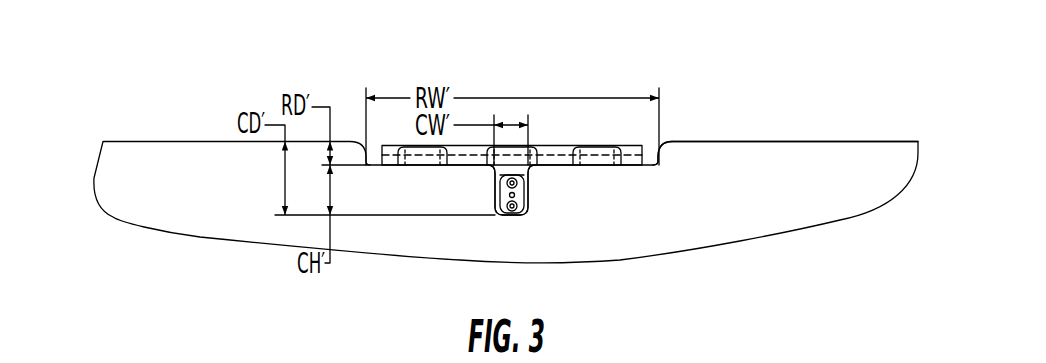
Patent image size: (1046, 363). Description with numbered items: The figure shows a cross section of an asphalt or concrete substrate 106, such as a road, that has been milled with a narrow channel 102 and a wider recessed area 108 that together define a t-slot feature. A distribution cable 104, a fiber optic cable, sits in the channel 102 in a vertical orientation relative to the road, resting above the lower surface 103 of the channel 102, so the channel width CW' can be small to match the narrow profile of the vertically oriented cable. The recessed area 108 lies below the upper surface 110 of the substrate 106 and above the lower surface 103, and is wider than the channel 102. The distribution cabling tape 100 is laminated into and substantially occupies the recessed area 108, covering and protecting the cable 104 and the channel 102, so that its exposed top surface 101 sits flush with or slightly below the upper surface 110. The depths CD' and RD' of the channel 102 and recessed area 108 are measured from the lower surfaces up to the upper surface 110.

The distribution cabling tape 100 is at (632, 142).
The exposed top surface of the cabling tape 101 is at (588, 147).
The channel 102 is at (496, 185).
The lower surface of the channel 103 is at (522, 215).
The distribution cable 104 is at (517, 174).
The substrate 106 is at (506, 202).
The recessed area 108 is at (659, 170).
The upper surface of the substrate 110 is at (827, 140).